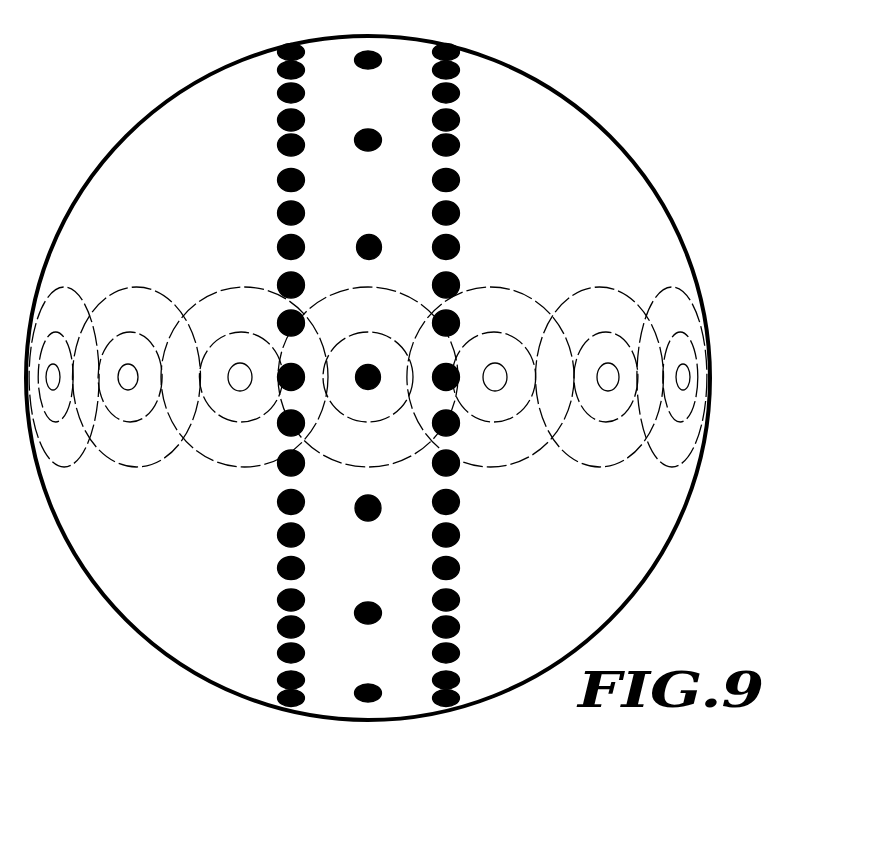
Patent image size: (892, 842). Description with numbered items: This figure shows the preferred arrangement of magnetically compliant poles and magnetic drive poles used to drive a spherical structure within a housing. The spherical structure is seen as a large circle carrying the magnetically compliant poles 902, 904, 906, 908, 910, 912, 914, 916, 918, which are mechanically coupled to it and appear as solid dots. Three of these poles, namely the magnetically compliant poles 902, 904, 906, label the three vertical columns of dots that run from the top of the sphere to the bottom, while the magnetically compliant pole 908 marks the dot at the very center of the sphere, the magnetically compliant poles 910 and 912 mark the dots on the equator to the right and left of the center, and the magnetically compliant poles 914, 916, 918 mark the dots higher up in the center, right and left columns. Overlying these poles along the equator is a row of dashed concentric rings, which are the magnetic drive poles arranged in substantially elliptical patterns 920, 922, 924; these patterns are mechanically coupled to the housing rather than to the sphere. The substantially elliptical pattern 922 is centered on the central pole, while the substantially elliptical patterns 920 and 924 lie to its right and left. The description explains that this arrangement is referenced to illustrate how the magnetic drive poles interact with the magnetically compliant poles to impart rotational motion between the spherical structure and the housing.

The magnetically compliant pole 902 is at (360, 698).
The magnetically compliant pole 904 is at (444, 704).
The magnetically compliant pole 906 is at (287, 704).
The magnetically compliant pole 908 is at (380, 368).
The magnetically compliant pole 910 is at (461, 371).
The magnetically compliant pole 912 is at (280, 368).
The magnetically compliant pole 914 is at (379, 243).
The magnetically compliant pole 916 is at (461, 243).
The magnetically compliant pole 918 is at (280, 241).
The substantially elliptical pattern of magnetic drive poles 920 is at (488, 471).
The substantially elliptical pattern of magnetic drive poles 922 is at (399, 469).
The substantially elliptical pattern of magnetic drive poles 924 is at (202, 459).